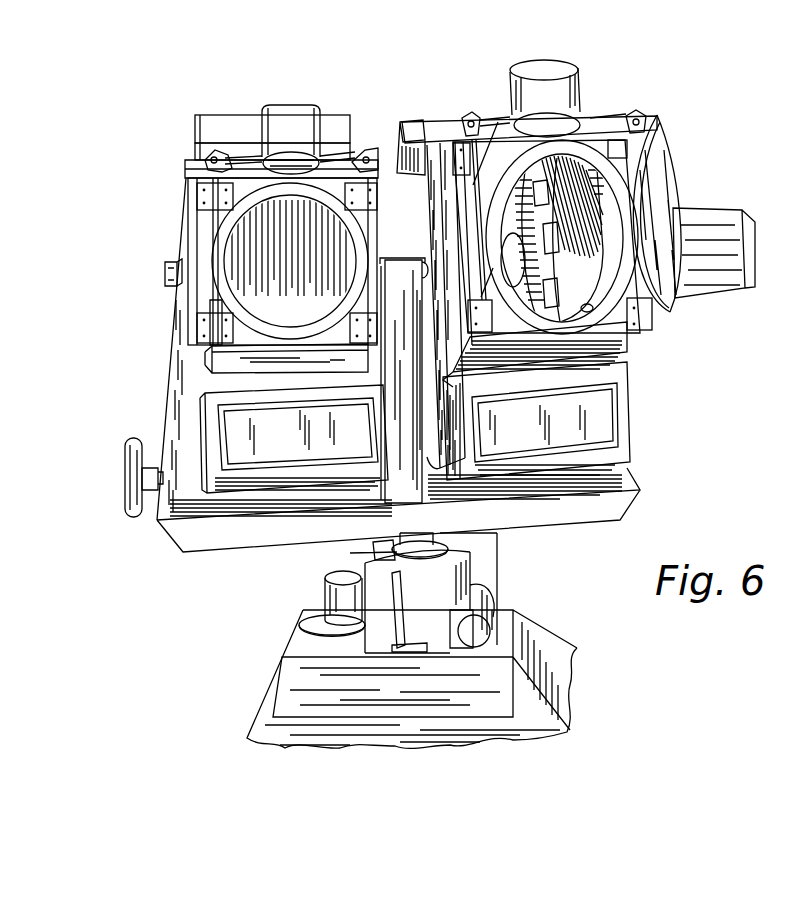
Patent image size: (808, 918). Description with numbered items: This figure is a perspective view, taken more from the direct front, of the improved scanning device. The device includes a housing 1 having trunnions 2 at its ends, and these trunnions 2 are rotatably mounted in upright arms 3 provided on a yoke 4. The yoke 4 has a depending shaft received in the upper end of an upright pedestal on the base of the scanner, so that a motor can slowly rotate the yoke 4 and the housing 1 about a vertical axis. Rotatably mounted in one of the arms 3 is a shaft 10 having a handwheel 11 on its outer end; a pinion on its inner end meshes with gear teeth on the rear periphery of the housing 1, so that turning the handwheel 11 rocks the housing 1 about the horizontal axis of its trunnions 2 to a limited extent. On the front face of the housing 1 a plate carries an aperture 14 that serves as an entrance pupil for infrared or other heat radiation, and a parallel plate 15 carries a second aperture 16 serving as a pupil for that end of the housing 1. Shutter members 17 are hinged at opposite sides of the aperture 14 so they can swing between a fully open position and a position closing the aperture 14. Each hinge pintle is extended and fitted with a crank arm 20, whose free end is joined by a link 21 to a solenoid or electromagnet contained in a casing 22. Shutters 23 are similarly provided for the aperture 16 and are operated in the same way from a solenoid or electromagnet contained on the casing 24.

The housing 1 is at (188, 213).
The trunnions 2 is at (165, 277).
The upright arms 3 is at (170, 365).
The yoke 4 is at (553, 512).
The shaft 10 is at (150, 465).
The handwheel 11 is at (125, 505).
The aperture 14 is at (277, 322).
The plate 15 is at (607, 332).
The aperture 16 is at (593, 310).
The shutter members 17 is at (215, 287).
The crank arm 20 is at (200, 165).
The link 21 is at (380, 148).
The casing 22 is at (291, 139).
The shutters 23 is at (498, 122).
The casing 24 is at (547, 74).